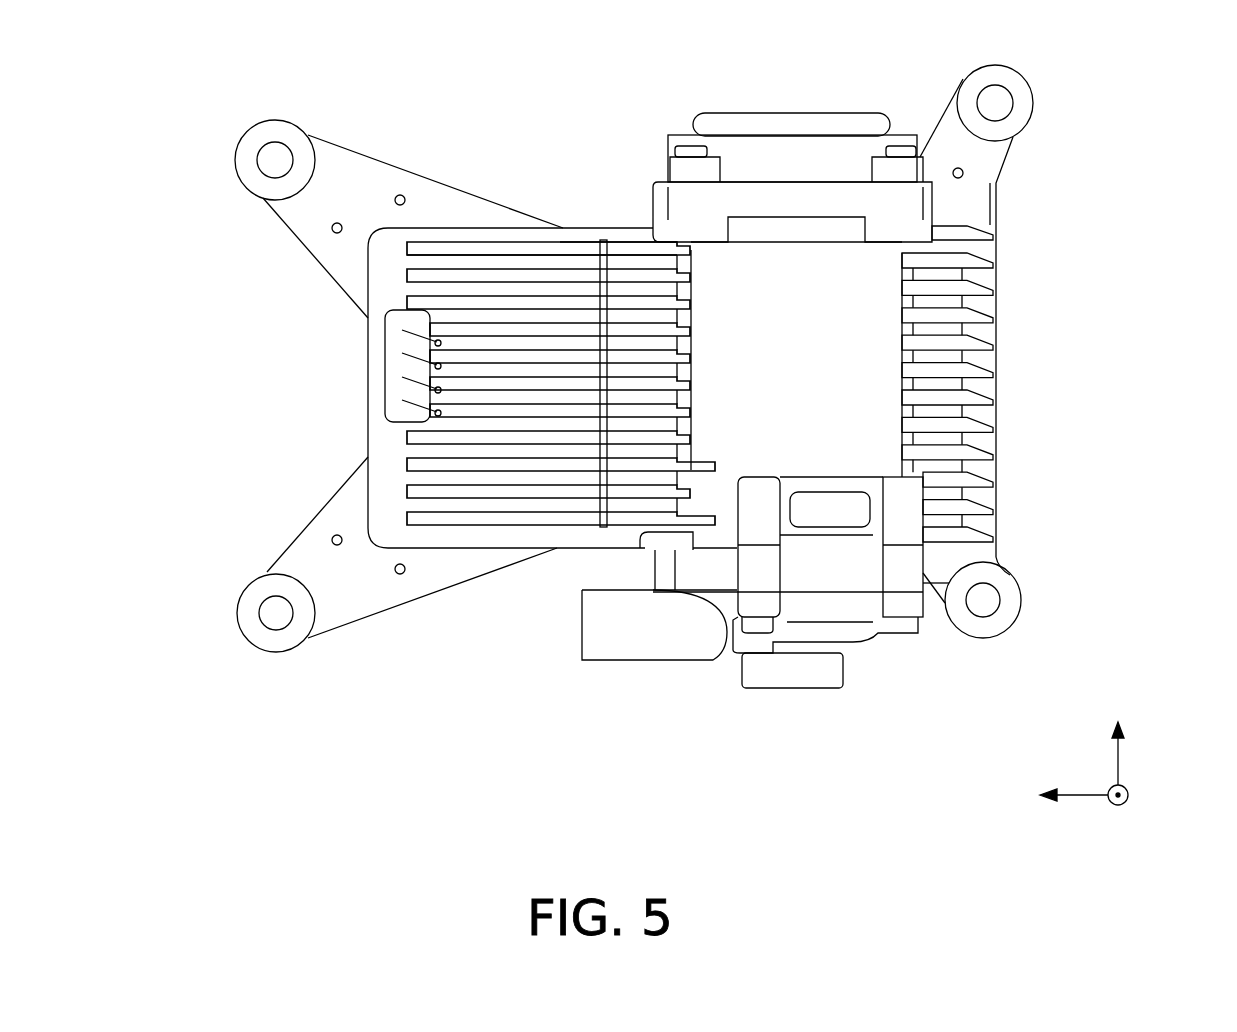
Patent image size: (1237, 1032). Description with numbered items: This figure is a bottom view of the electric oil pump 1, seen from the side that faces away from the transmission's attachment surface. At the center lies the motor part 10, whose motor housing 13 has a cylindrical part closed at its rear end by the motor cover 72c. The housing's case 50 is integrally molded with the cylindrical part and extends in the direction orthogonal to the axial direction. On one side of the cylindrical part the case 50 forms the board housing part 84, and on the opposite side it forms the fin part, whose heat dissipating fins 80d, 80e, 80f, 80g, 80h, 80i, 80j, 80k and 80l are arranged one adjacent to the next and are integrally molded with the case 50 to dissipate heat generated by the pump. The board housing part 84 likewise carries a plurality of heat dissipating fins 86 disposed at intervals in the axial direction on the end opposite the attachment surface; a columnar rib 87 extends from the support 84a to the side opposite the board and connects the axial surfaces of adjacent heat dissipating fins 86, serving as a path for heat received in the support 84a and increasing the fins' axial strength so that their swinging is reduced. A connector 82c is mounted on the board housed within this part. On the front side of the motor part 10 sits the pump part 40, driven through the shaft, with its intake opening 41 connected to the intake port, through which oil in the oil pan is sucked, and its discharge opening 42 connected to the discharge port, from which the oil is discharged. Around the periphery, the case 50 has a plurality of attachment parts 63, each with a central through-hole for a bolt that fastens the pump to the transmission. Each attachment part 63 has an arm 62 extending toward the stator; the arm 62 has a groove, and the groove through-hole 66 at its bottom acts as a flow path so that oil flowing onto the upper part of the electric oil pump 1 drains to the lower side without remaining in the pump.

The electric oil pump 1 is at (1160, 128).
The motor part 10 is at (840, 106).
The motor housing 13 is at (757, 270).
The pump part 40 is at (867, 651).
The intake opening 41 is at (580, 638).
The discharge opening 42 is at (805, 689).
The case 50 is at (385, 437).
The arm 62 is at (343, 616).
The attachment part 63 is at (266, 128).
The groove through-hole 66 is at (332, 540).
The motor cover 72c is at (795, 125).
The heat dissipating fin 80d is at (990, 455).
The heat dissipating fin 80e is at (990, 427).
The heat dissipating fin 80f is at (990, 400).
The heat dissipating fin 80g is at (990, 372).
The heat dissipating fin 80h is at (990, 345).
The heat dissipating fin 80i is at (990, 317).
The heat dissipating fin 80j is at (990, 290).
The heat dissipating fin 80k is at (990, 262).
The heat dissipating fin 80l is at (990, 233).
The connector 82c is at (395, 355).
The board housing part 84 is at (563, 226).
The support 84a is at (580, 250).
The heat dissipating fin 86 is at (508, 258).
The rib 87 is at (613, 237).